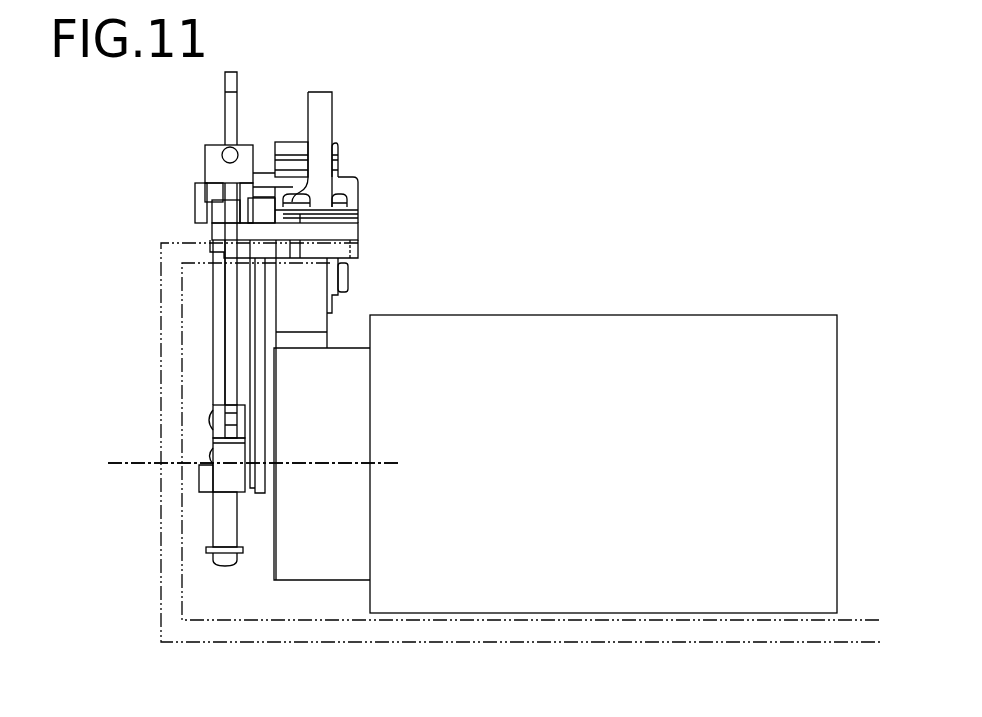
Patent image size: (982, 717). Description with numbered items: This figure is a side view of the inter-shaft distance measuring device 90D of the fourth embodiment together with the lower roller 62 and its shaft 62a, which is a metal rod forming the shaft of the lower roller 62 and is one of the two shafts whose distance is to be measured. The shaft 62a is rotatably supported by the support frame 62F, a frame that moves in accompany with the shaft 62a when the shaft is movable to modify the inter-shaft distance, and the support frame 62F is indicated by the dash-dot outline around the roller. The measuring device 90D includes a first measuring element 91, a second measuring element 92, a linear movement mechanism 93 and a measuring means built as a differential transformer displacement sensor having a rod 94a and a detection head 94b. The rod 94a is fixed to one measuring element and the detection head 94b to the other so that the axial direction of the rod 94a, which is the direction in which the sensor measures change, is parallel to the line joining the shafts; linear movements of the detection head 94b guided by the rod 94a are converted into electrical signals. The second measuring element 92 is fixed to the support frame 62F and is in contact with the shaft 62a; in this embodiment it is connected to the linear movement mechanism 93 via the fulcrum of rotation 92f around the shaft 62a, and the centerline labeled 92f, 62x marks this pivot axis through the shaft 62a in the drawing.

The inter-shaft distance measuring device 90D is at (377, 165).
The first measuring element 91 is at (330, 107).
The second measuring element 92 is at (312, 345).
The fulcrum of rotation 92f is at (108, 463).
The linear movement mechanism 93 is at (215, 325).
The rod 94a is at (228, 118).
The detection head 94b is at (215, 177).
The lower roller 62 is at (732, 283).
The shaft 62a is at (313, 558).
The support frame 62F is at (262, 643).
The housing reference plane 62x is at (250, 502).